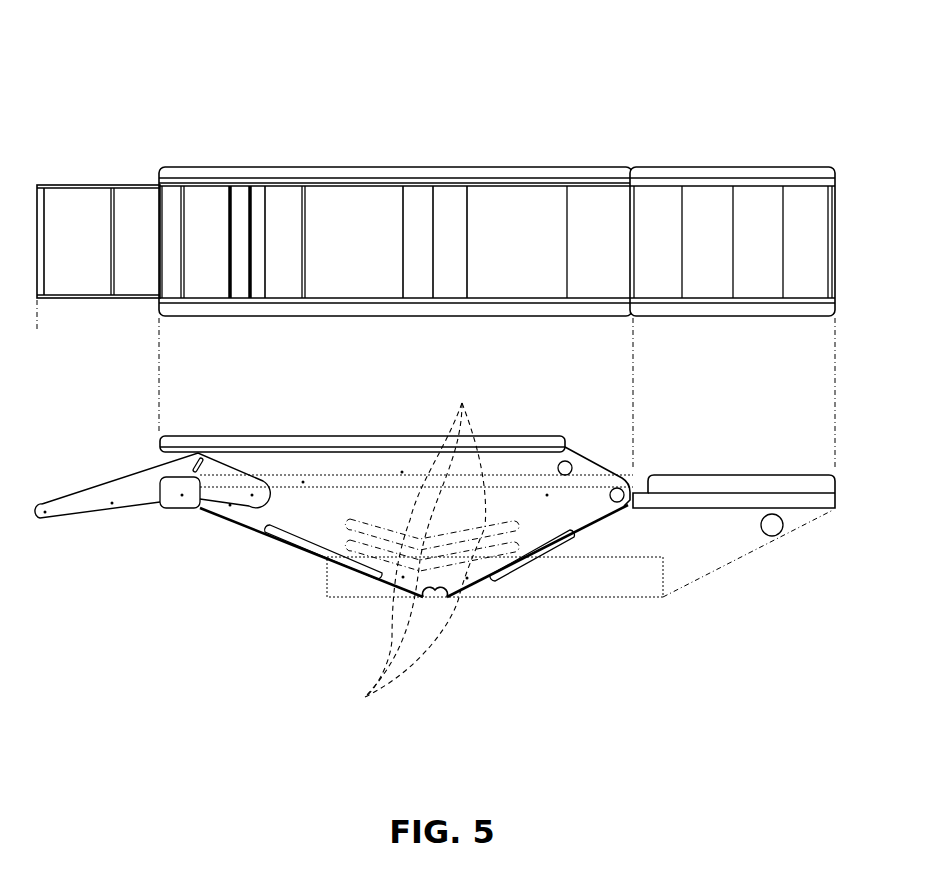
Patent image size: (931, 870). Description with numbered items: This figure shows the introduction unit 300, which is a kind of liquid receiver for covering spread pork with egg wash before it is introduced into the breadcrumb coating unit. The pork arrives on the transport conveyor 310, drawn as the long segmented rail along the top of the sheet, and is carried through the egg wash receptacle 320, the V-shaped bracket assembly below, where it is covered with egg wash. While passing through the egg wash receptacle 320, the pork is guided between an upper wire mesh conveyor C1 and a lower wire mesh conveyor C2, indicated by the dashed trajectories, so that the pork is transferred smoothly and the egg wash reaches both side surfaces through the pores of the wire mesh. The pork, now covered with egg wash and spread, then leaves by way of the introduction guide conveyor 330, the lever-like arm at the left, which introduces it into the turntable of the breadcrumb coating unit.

The introduction unit 300 is at (420, 163).
The transport conveyor 310 is at (742, 483).
The egg wash receptacle 320 is at (322, 528).
The introduction guide conveyor 330 is at (114, 475).
The upper wire mesh conveyor C1 is at (425, 535).
The lower wire mesh conveyor C2 is at (406, 620).